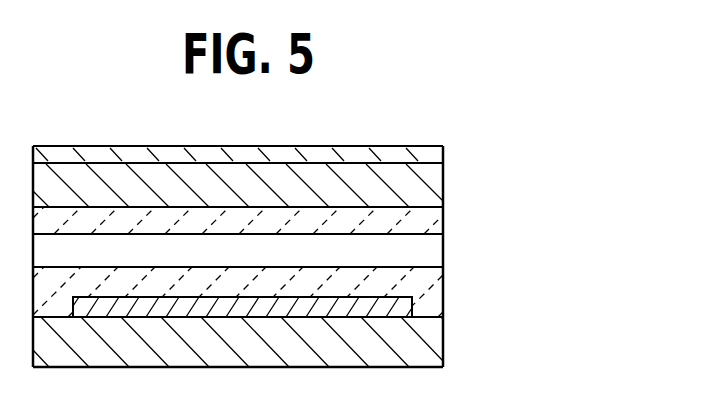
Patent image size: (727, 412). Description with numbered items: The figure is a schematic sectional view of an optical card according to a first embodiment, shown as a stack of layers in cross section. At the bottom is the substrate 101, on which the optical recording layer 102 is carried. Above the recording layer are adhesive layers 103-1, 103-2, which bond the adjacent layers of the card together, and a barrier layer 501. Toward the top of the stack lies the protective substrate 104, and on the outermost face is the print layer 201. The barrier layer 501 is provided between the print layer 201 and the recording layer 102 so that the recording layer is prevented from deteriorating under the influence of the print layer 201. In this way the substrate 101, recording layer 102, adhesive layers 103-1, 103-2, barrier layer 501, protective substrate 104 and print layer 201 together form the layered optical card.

The print layer 201 is at (430, 157).
The protective substrate 104 is at (428, 176).
The adhesive layer 103-1 is at (428, 222).
The barrier layer 501 is at (428, 258).
The adhesive layer 103-2 is at (425, 292).
The optical recording layer 102 is at (400, 311).
The substrate 101 is at (420, 350).